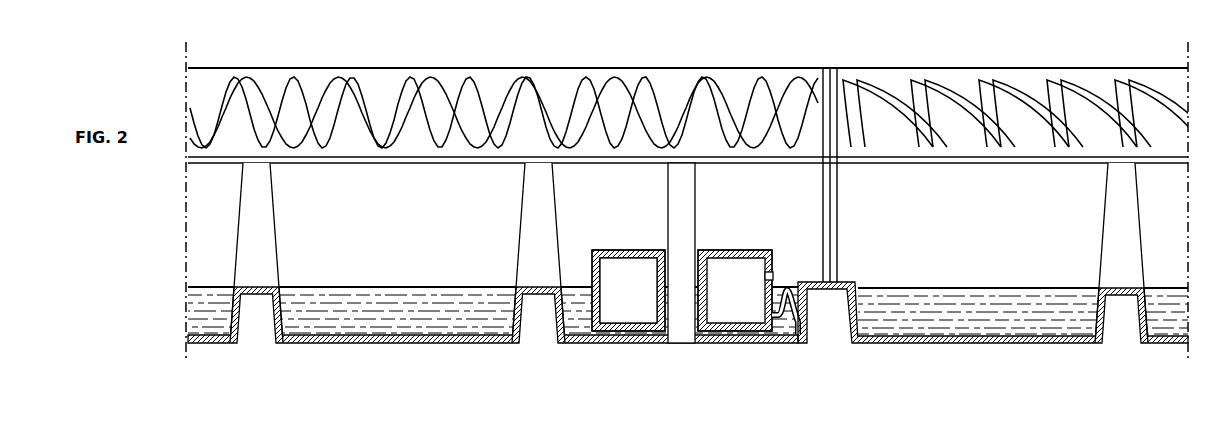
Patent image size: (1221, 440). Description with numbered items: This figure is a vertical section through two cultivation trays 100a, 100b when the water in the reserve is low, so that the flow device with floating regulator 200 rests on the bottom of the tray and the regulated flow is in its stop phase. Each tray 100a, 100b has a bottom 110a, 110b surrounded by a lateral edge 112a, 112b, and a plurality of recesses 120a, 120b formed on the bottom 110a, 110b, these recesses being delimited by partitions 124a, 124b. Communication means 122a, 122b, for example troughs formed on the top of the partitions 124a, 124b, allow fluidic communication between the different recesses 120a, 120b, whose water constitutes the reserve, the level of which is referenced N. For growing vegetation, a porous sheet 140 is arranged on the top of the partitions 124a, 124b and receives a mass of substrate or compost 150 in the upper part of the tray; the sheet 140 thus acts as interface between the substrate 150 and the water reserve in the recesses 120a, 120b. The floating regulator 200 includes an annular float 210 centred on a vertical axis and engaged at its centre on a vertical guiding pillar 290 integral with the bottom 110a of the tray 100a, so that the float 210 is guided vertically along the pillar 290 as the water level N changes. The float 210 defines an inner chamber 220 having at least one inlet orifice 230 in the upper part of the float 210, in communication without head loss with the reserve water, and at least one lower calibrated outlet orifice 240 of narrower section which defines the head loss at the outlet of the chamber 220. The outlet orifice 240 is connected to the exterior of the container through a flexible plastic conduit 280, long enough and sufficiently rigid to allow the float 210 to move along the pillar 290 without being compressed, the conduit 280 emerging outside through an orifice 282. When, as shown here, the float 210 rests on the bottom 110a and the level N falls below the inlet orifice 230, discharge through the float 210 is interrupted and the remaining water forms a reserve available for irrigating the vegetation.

The tray 100a is at (493, 282).
The tray 100b is at (993, 283).
The bottom 110a is at (350, 343).
The bottom 110b is at (912, 343).
The lateral edge 112a is at (773, 90).
The lateral edge 112b is at (1033, 92).
The recesses 120a is at (418, 305).
The recesses 120b is at (970, 305).
The communication means 122a is at (258, 227).
The communication means 122b is at (1120, 227).
The partitions 124a is at (258, 333).
The partitions 124b is at (1122, 332).
The porous sheet 140 is at (380, 162).
The substrate 150 is at (485, 117).
The floating regulator 200 is at (623, 285).
The float 210 is at (628, 250).
The inner chamber 220 is at (625, 303).
The inlet orifice 230 is at (782, 275).
The outlet orifice 240 is at (755, 317).
The conduit 280 is at (792, 320).
The orifice 282 is at (817, 334).
The guiding pillar 290 is at (682, 313).
The water level N is at (333, 287).